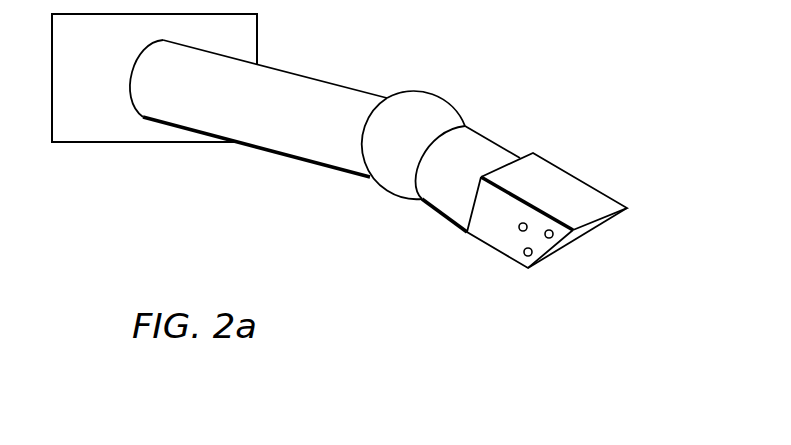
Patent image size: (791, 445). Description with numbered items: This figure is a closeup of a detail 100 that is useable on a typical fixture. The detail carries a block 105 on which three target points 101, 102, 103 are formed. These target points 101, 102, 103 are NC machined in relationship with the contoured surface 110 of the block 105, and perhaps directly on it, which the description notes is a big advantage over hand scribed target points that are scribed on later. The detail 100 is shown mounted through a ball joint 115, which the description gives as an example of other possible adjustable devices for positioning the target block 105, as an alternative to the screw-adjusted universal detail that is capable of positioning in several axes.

The detail 100 is at (366, 162).
The ball joint 115 is at (380, 180).
The block 105 is at (588, 183).
The contoured surface 110 is at (593, 230).
The target point 101 is at (519, 227).
The target point 102 is at (524, 252).
The target point 103 is at (550, 238).